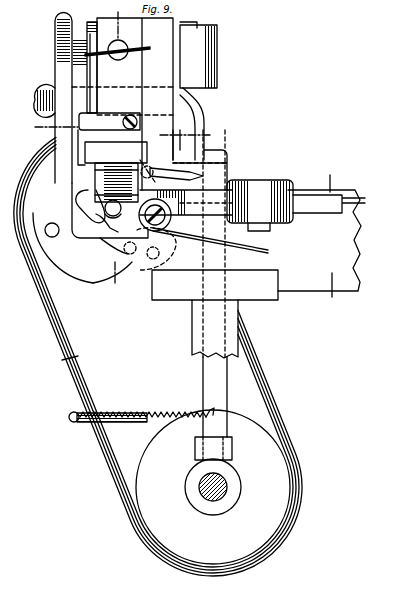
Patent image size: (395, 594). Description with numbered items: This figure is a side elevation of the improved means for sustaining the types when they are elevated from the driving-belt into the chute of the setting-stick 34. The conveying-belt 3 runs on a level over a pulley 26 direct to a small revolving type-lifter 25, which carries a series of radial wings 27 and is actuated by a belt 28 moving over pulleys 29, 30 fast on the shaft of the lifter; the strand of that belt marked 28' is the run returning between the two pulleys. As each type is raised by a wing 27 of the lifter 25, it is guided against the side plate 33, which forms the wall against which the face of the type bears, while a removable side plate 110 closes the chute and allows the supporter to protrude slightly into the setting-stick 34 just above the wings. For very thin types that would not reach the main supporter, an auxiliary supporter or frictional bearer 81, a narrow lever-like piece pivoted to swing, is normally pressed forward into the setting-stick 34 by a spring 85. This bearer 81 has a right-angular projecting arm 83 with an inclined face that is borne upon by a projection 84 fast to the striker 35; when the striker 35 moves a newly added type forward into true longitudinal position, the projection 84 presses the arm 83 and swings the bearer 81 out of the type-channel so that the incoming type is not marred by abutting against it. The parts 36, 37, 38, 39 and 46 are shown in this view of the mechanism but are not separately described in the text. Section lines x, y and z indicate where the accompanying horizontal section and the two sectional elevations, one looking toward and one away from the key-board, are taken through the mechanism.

The conveying-belt 3 is at (365, 203).
The revolving type-lifter 25 is at (94, 216).
The pulley 26 is at (172, 221).
The radial wings 27 is at (111, 226).
The belt 28 is at (153, 356).
The belt strand 28' is at (63, 364).
The pulley 29 is at (90, 233).
The pulley 30 is at (213, 487).
The side plate 33 is at (56, 57).
The setting-stick 34 is at (76, 38).
The striker 35 is at (186, 158).
The rod 36 is at (215, 295).
The spring 37 is at (168, 411).
The pin 38 is at (50, 225).
The cam 39 is at (159, 254).
The roller 46 is at (116, 190).
The lever-like bearer 81 is at (88, 94).
The right-angular projecting arm 83 is at (112, 147).
The projection 84 is at (176, 176).
The spring 85 is at (104, 105).
The removable side plate 110 is at (149, 104).
The section line x is at (120, 131).
The section line y is at (329, 242).
The section line z is at (113, 147).